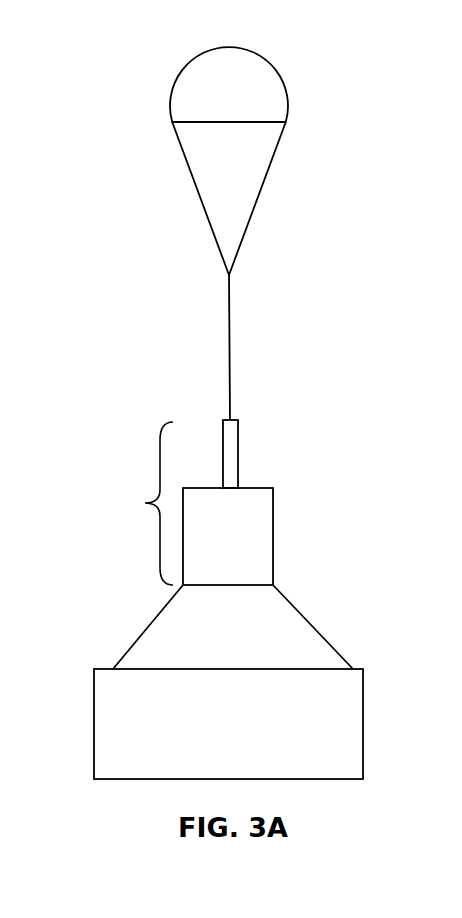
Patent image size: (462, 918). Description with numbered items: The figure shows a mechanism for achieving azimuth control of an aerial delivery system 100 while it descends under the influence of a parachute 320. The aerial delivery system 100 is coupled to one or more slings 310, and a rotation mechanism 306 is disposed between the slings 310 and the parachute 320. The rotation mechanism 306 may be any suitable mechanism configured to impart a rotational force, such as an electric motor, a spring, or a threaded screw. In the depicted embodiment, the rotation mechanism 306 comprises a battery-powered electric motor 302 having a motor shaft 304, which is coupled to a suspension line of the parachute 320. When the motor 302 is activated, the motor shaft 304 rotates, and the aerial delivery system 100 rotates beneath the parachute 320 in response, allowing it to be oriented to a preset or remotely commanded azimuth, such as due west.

The aerial delivery system 100 is at (94, 697).
The electric motor 302 is at (275, 517).
The motor shaft 304 is at (250, 449).
The rotation mechanism 306 is at (266, 496).
The slings 310 is at (147, 628).
The parachute 320 is at (260, 65).